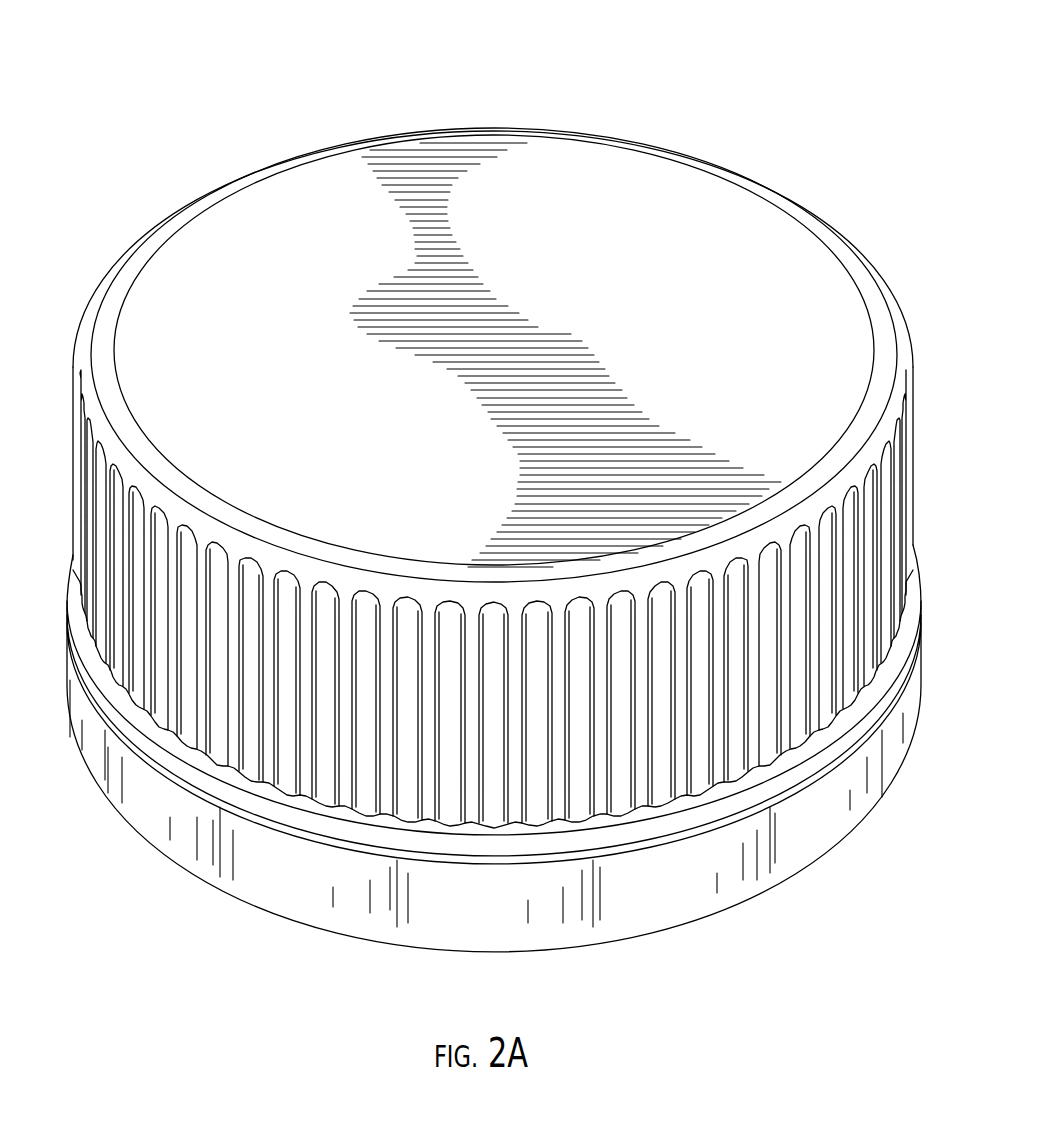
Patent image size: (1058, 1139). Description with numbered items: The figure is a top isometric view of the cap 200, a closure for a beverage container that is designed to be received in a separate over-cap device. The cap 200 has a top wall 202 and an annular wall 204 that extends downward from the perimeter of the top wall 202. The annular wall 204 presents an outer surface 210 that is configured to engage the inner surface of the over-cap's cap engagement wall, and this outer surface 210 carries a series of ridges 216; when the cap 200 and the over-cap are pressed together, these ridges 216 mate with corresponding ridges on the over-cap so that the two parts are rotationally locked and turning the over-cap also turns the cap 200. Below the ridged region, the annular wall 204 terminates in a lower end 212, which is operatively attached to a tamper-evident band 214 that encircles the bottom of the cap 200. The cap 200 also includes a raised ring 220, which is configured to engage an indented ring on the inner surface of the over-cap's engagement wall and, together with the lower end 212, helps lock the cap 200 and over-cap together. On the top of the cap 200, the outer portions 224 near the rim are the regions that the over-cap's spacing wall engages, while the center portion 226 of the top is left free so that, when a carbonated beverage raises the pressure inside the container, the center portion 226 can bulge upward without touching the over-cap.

The cap 200 is at (220, 145).
The top wall 202 is at (692, 215).
The annular wall 204 is at (898, 340).
The outer surface 210 is at (73, 497).
The lower end 212 is at (342, 822).
The tamper-evident band 214 is at (697, 883).
The ridges 216 is at (910, 540).
The raised ring 220 is at (847, 730).
The outer portions 224 is at (165, 322).
The center portion 226 is at (476, 306).